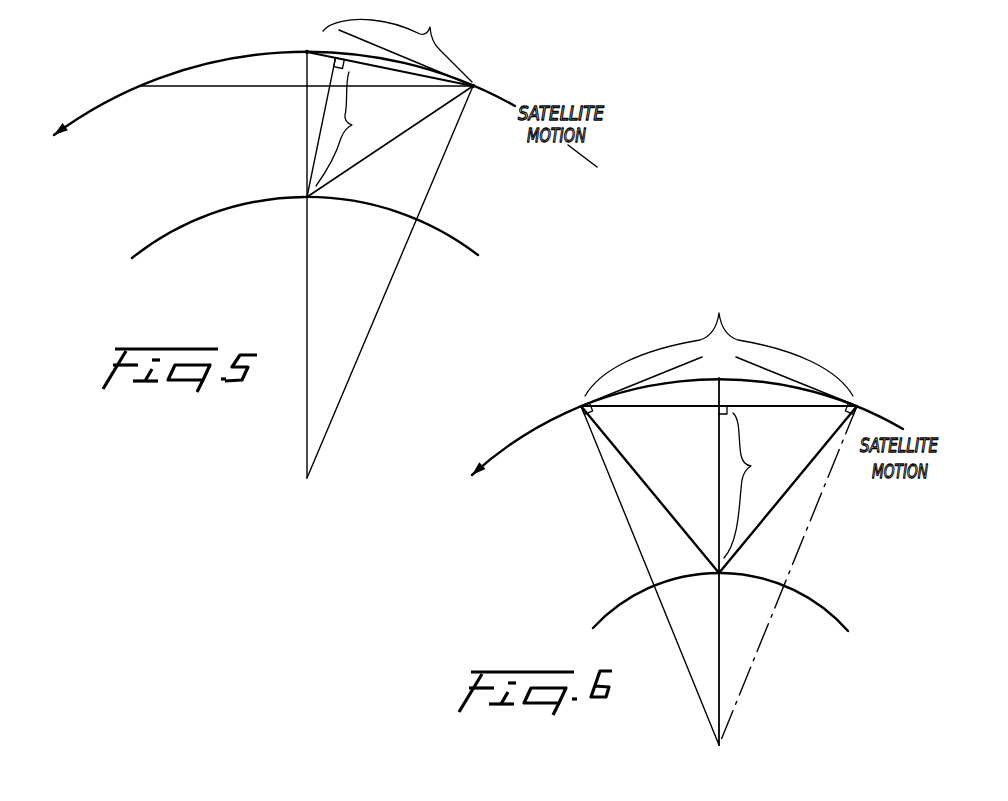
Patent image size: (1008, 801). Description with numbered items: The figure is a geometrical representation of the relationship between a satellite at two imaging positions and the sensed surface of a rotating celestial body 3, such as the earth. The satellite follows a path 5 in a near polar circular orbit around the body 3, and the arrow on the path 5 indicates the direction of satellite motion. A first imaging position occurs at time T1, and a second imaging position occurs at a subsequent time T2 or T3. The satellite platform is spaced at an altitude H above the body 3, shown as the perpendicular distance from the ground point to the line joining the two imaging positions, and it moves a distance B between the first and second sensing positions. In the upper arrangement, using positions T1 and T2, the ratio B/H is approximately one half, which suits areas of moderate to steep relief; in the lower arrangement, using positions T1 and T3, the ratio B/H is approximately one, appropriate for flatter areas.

In FIG. 5, the rotating celestial body 3 is at (193, 212).
In FIG. 6, the rotating celestial body 3 is at (610, 596).
In FIG. 5, the path 5 is at (197, 68).
In FIG. 6, the path 5 is at (513, 443).
In FIG. 5, the time of first imaging position T1 is at (466, 70).
In FIG. 6, the time of first imaging position T1 is at (857, 404).
In FIG. 5, the time of second imaging position T2 is at (319, 25).
In FIG. 6, the time of second imaging position T3 is at (581, 404).
In FIG. 5, the base distance B is at (397, 41).
In FIG. 6, the base distance B is at (719, 340).
In FIG. 5, the altitude H is at (336, 127).
In FIG. 6, the altitude H is at (746, 485).